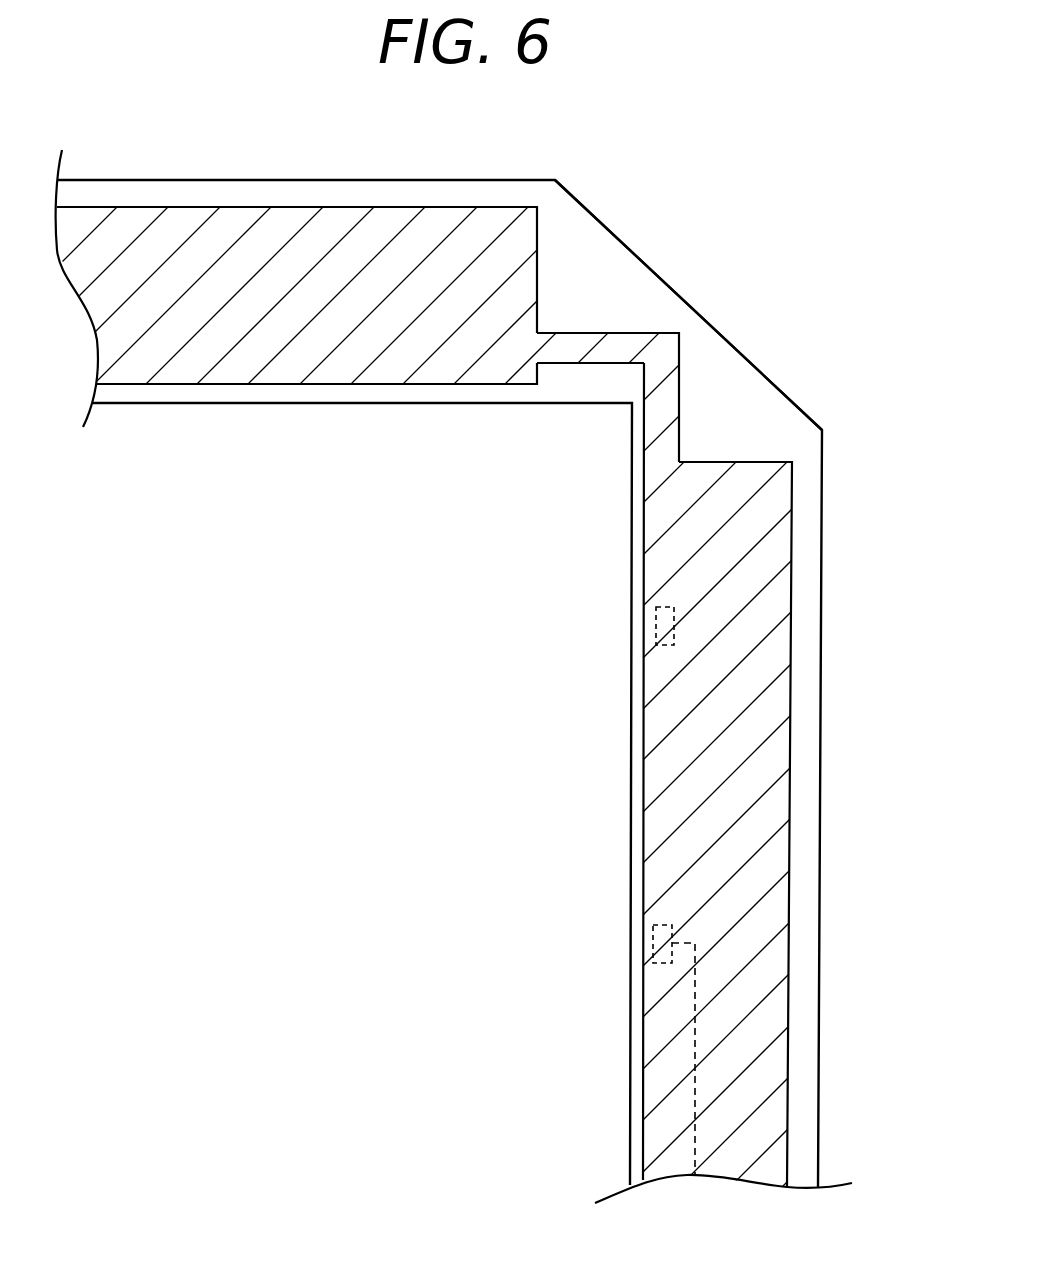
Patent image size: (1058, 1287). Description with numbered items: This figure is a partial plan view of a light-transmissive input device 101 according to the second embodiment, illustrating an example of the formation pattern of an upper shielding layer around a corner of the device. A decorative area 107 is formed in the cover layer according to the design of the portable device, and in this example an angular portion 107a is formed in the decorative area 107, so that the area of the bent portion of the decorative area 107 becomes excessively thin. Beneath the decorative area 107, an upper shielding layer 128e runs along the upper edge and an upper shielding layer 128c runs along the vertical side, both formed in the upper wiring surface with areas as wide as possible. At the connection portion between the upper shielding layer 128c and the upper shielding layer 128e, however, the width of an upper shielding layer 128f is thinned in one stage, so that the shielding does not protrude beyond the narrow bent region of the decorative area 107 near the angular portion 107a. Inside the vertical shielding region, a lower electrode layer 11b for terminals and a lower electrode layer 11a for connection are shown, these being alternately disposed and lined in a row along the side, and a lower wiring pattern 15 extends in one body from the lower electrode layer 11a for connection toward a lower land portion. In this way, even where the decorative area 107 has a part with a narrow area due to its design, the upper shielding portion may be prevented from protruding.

The light-transmissive input device 101 is at (715, 212).
The decorative area 107 is at (755, 388).
The angular portion 107a is at (692, 303).
The upper shielding layer 128e is at (292, 222).
The upper shielding layer 128f is at (582, 342).
The upper shielding layer 128c is at (778, 748).
The lower electrode layer for terminals 11b is at (656, 620).
The lower electrode layer for connection 11a is at (653, 940).
The lower wiring pattern 15 is at (695, 1060).